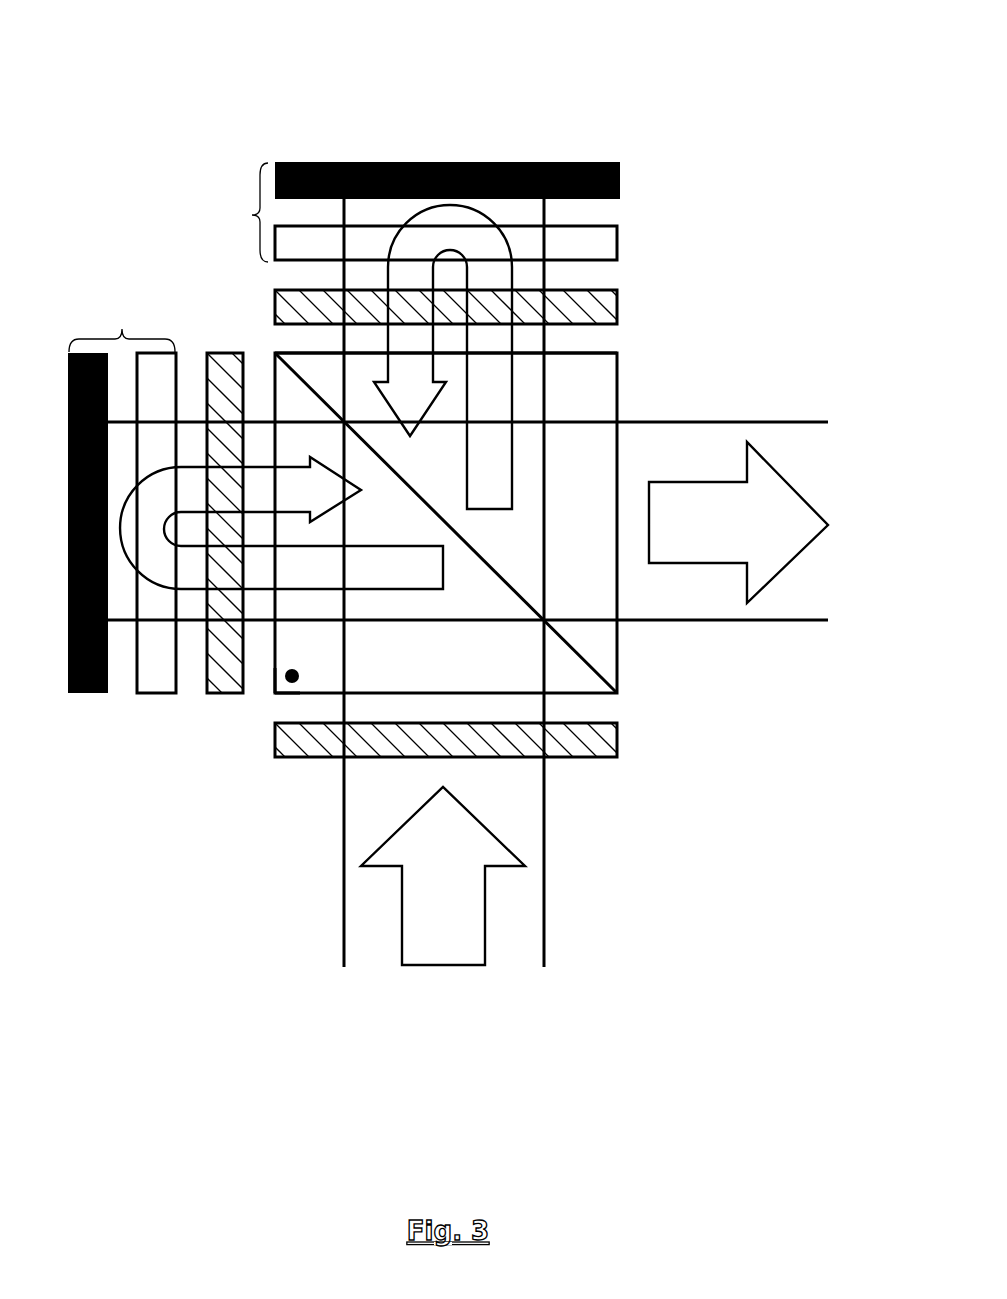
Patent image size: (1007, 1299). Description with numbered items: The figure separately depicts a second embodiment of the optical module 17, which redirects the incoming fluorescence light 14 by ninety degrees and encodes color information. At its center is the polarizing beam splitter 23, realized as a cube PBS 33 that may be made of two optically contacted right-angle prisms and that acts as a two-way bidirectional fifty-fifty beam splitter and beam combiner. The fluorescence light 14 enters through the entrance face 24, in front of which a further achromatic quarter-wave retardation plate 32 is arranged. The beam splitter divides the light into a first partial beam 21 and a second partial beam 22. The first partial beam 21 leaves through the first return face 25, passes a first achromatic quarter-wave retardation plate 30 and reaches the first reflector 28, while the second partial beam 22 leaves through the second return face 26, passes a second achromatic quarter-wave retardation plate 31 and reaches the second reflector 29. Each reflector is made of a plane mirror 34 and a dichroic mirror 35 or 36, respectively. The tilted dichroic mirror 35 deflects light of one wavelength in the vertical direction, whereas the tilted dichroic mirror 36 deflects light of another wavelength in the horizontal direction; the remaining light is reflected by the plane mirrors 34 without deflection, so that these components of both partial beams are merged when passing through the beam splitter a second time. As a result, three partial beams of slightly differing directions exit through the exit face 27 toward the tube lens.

The optical module 17 is at (613, 118).
The plane mirror 34 is at (620, 177).
The dichroic mirror 36 is at (618, 244).
The second achromatic quarter-wave retardation plate 31 is at (618, 305).
The second reflector 29 is at (241, 212).
The second partial beam 22 is at (547, 338).
The exit face 27 is at (618, 385).
The second return face 26 is at (593, 350).
The entrance face 24 is at (588, 698).
The first partial beam 21 is at (257, 418).
The fluorescence light 14 is at (338, 907).
The first reflector 28 is at (122, 325).
The dichroic mirror 35 is at (152, 697).
The first achromatic quarter-wave retardation plate 30 is at (217, 348).
The first return face 25 is at (265, 677).
The polarizing beam splitter 23 is at (273, 700).
The cube PBS 33 is at (262, 740).
The further achromatic quarter-wave retardation plate 32 is at (283, 762).